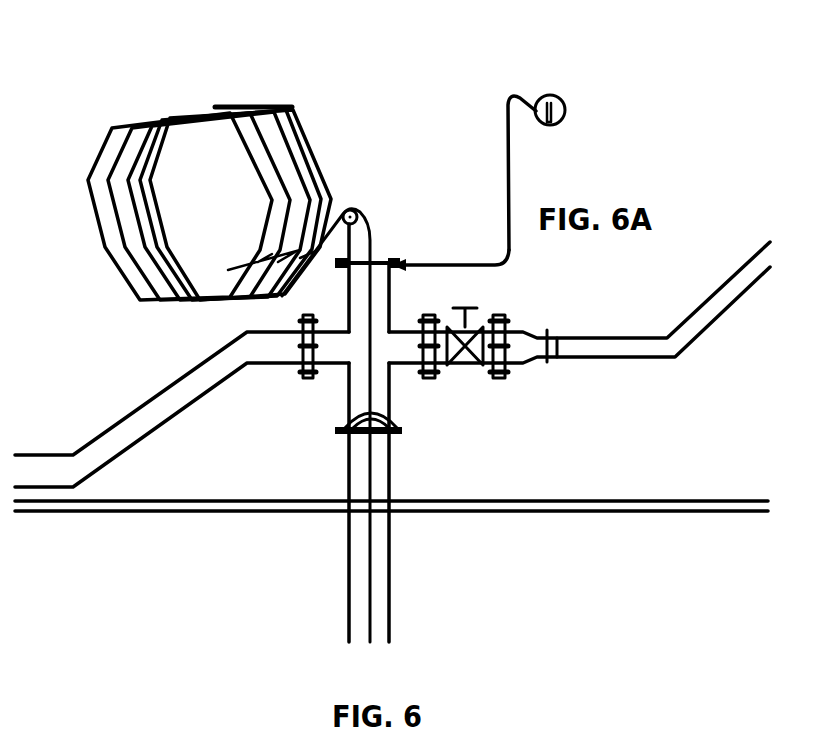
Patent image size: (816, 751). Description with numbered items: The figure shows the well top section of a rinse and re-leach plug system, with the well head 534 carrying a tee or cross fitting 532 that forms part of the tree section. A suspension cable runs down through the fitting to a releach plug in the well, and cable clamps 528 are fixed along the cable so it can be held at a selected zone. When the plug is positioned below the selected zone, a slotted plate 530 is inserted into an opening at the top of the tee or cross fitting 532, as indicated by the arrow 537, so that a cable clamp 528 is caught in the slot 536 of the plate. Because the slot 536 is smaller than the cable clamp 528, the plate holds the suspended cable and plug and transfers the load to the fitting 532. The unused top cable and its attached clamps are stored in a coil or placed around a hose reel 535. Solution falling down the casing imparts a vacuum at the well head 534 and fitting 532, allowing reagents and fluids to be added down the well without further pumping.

In FIG. 6, the cable clamp 528 is at (384, 252).
In FIG. 6A, the slotted plate 530 is at (553, 97).
In FIG. 6, the tee or cross fitting 532 is at (339, 381).
In FIG. 6, the well head 534 is at (403, 428).
In FIG. 6, the hose reel 535 is at (178, 108).
In FIG. 6A, the slot 536 is at (548, 125).
In FIG. 6A, the arrow 537 is at (511, 248).